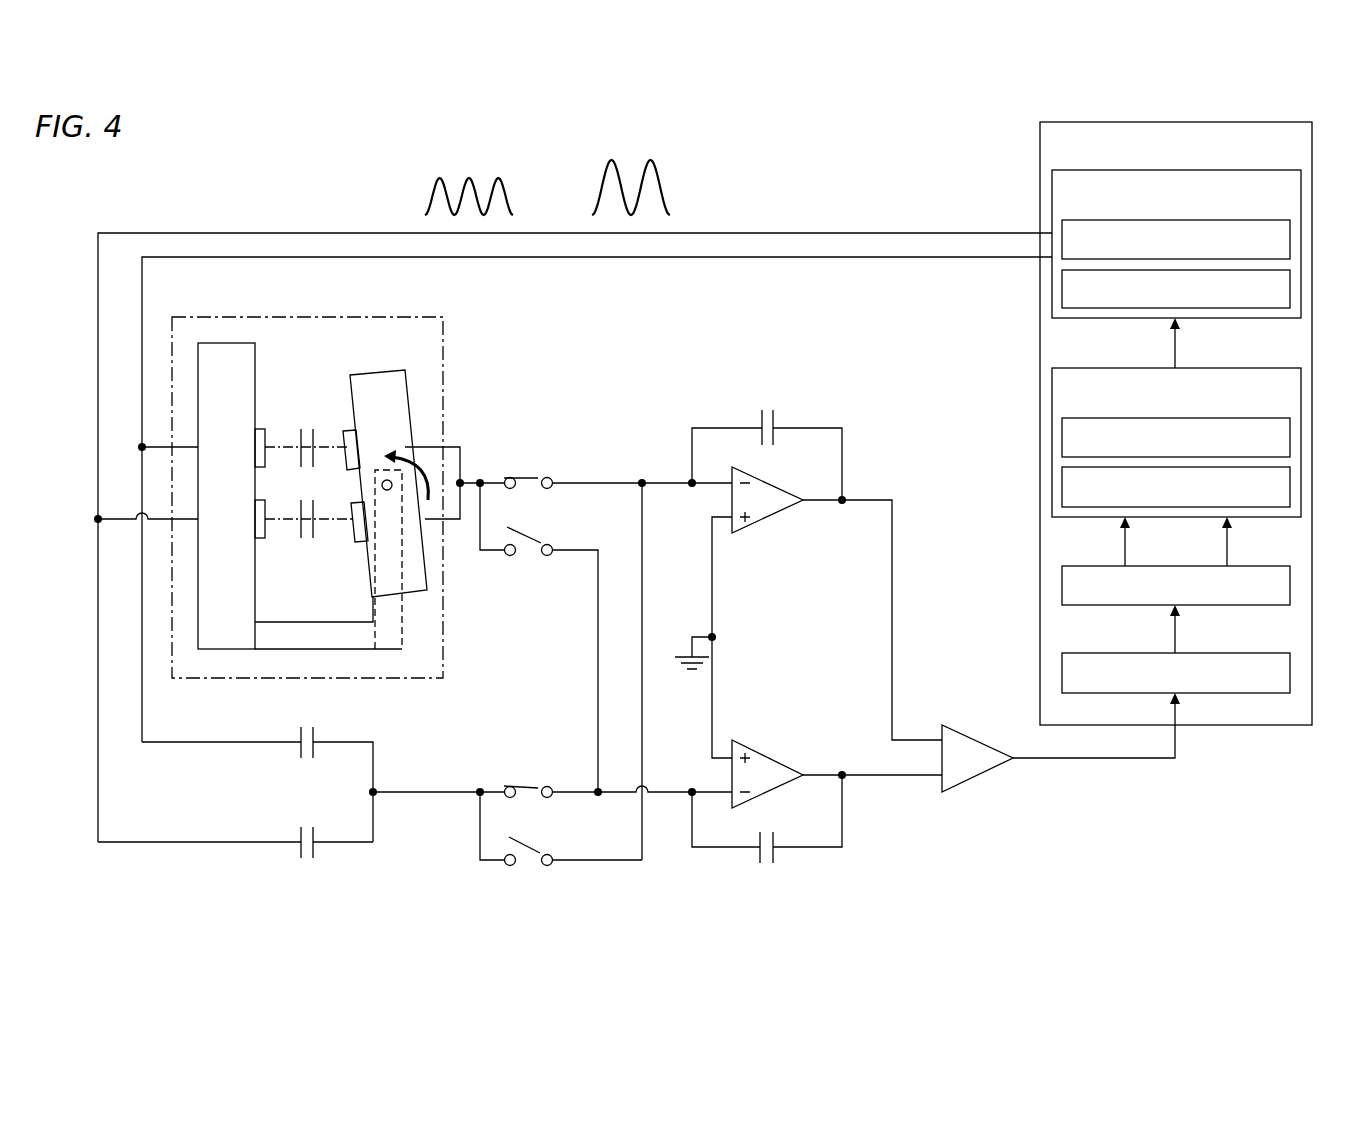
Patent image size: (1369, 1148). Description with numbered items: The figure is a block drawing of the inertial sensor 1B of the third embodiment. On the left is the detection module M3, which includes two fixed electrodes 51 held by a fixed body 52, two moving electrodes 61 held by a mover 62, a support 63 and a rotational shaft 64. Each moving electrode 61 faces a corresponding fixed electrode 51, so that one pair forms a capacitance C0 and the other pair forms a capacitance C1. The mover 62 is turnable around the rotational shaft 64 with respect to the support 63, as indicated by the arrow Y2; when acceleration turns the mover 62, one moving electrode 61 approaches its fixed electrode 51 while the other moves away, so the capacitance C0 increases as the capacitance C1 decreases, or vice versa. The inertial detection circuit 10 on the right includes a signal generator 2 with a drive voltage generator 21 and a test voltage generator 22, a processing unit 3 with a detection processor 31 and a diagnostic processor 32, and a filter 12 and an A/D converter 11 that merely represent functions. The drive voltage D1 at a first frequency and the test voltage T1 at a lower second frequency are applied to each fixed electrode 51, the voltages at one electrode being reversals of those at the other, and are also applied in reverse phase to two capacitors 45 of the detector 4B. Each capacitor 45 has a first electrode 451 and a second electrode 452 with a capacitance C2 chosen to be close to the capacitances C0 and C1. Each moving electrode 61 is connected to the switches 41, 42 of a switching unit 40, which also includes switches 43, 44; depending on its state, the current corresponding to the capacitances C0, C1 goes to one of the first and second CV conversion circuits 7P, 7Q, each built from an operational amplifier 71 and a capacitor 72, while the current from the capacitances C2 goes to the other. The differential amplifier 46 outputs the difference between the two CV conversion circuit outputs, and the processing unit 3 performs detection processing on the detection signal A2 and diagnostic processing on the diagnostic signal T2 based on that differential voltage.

The inertial sensor 1B is at (1318, 101).
The inertial detection circuit 10 is at (1272, 122).
The signal generator 2 is at (1301, 181).
The drive voltage generator 21 is at (1290, 239).
The test voltage generator 22 is at (1290, 290).
The processing unit 3 is at (1301, 383).
The detection processor 31 is at (1290, 438).
The diagnostic processor 32 is at (1290, 488).
The filter 12 is at (1290, 586).
The A/D converter 11 is at (1290, 676).
The detection module M3 is at (447, 335).
The fixed body 52 is at (248, 365).
The fixed electrode 51 is at (260, 427).
The mover 62 is at (373, 380).
The moving electrode 61 is at (345, 430).
The support 63 is at (383, 652).
The rotational shaft 64 is at (380, 485).
The switching unit 40 is at (561, 458).
The switch 41 is at (520, 477).
The switch 42 is at (528, 560).
The switch 43 is at (521, 784).
The switch 44 is at (528, 868).
The capacitor 45 is at (280, 821).
The first electrode 451 is at (300, 752).
The second electrode 452 is at (312, 762).
The differential amplifier 46 is at (965, 740).
The first CV conversion circuit 7P is at (759, 448).
The second CV conversion circuit 7Q is at (765, 822).
The operational amplifier 71 is at (775, 490).
The capacitor 72 is at (770, 410).
The detector 4B is at (858, 868).
The drive voltage D1 is at (432, 198).
The test voltage T1 is at (670, 205).
The capacitance C0 is at (306, 437).
The capacitance C1 is at (306, 509).
The capacitance C2 is at (306, 764).
The arrow Y2 is at (418, 462).
The detection signal A2 is at (1109, 541).
The diagnostic signal T2 is at (1241, 541).